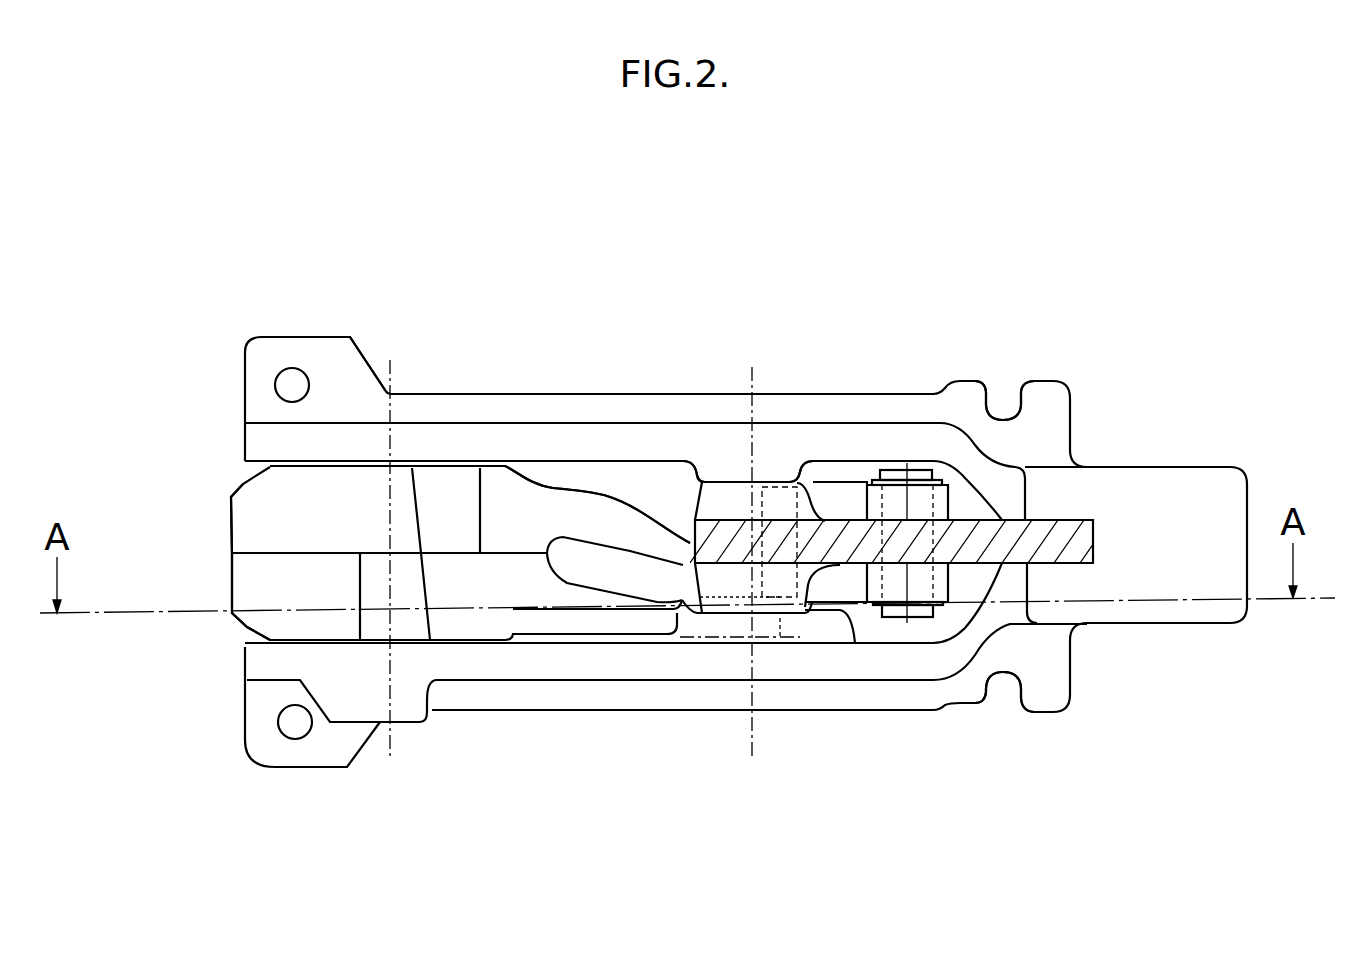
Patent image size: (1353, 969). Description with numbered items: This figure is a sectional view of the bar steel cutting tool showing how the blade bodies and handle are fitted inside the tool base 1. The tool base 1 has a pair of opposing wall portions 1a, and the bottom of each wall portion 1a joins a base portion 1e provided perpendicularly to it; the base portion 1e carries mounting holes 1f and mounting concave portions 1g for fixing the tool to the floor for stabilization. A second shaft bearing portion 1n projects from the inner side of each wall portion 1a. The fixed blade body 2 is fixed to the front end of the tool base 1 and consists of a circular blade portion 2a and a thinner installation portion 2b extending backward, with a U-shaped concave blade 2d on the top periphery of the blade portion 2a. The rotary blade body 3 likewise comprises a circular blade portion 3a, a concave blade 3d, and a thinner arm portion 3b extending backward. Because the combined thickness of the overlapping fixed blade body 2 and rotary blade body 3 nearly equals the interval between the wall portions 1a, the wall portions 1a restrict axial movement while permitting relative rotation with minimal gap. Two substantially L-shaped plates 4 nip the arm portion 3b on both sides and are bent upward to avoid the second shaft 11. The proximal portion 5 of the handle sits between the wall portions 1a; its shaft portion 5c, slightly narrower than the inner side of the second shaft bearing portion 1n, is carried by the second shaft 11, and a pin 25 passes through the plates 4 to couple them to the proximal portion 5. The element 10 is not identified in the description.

The tool base 1 is at (532, 380).
The wall portion 1a is at (663, 437).
The base portion 1e is at (332, 398).
The mounting hole 1f is at (292, 383).
The mounting concave portion 1g is at (1002, 395).
The second shaft bearing portion 1n is at (717, 467).
The axis line 10 is at (393, 423).
The second shaft 11 is at (753, 422).
The fixed blade body 2 is at (230, 632).
The blade portion 2a is at (270, 597).
The installation portion 2b is at (652, 617).
The concave blade 2d is at (424, 598).
The rotary blade body 3 is at (212, 500).
The blade portion 3a is at (263, 521).
The arm portion 3b is at (683, 542).
The concave blade 3d is at (437, 468).
The L shaped plate 4 is at (848, 507).
The proximal portion of the handle 5 is at (970, 550).
The shaft portion 5c is at (728, 500).
The pin 25 is at (917, 612).